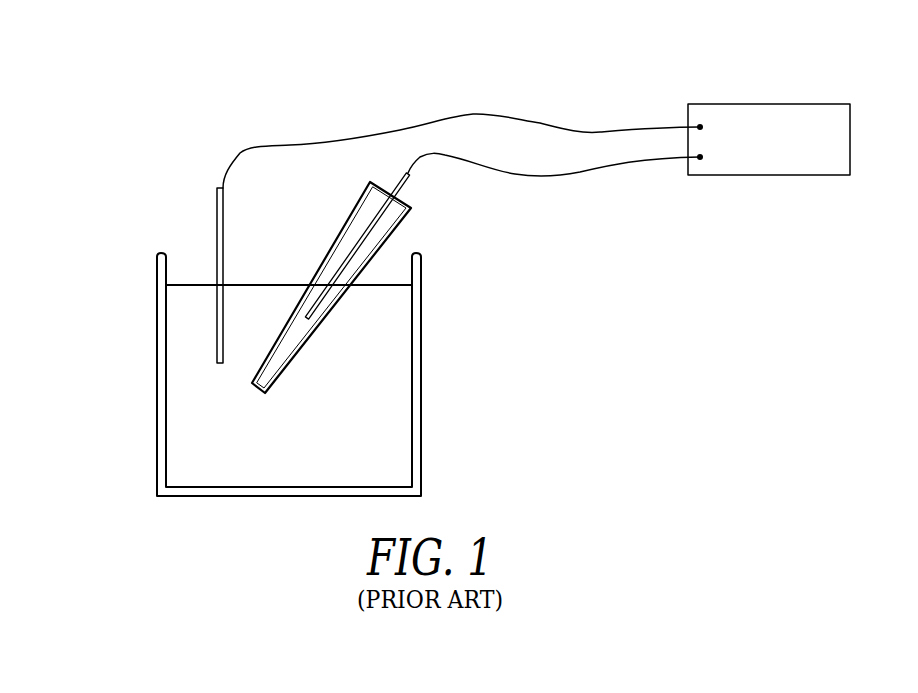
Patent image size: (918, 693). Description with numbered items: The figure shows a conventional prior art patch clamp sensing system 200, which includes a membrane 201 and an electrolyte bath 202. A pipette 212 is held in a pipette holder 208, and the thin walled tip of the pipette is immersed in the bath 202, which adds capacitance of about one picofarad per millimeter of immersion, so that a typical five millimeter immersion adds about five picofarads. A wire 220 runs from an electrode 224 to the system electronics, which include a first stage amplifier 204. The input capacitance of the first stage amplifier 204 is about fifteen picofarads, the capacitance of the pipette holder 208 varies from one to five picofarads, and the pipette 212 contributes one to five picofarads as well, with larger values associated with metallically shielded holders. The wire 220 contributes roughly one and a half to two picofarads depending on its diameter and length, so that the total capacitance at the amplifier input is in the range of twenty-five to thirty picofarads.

The patch clamp system 200 is at (137, 170).
The membrane 201 is at (257, 393).
The electrolyte bath 202 is at (373, 403).
The first stage amplifier 204 is at (769, 124).
The pipette holder 208 is at (400, 226).
The pipette 212 is at (404, 207).
The wire 220 is at (512, 116).
The electrode 224 is at (390, 190).